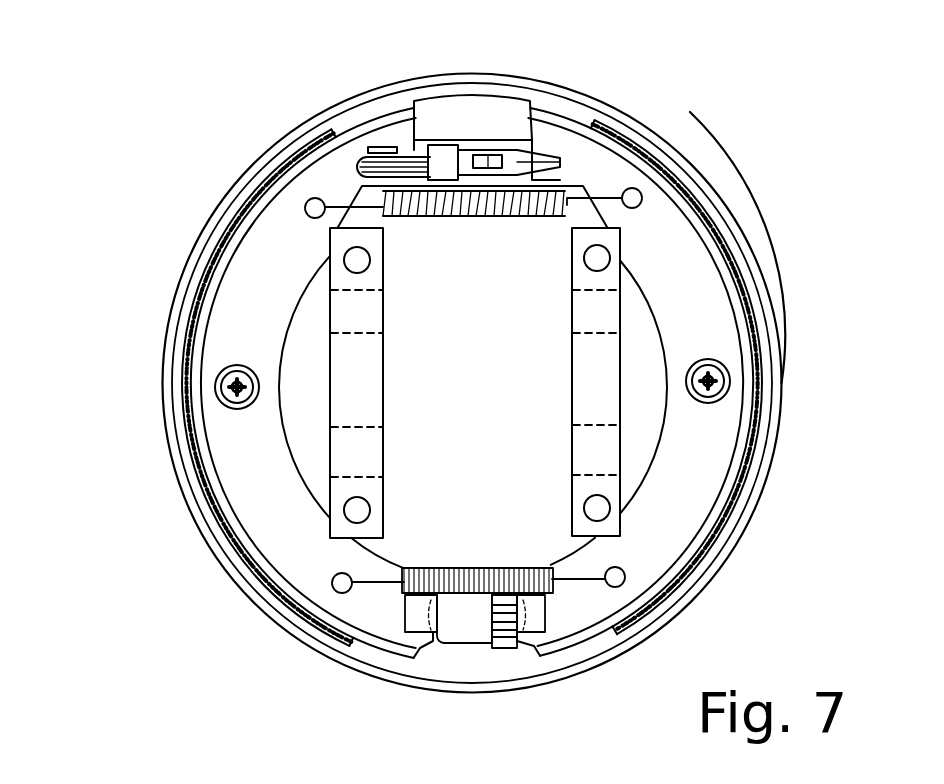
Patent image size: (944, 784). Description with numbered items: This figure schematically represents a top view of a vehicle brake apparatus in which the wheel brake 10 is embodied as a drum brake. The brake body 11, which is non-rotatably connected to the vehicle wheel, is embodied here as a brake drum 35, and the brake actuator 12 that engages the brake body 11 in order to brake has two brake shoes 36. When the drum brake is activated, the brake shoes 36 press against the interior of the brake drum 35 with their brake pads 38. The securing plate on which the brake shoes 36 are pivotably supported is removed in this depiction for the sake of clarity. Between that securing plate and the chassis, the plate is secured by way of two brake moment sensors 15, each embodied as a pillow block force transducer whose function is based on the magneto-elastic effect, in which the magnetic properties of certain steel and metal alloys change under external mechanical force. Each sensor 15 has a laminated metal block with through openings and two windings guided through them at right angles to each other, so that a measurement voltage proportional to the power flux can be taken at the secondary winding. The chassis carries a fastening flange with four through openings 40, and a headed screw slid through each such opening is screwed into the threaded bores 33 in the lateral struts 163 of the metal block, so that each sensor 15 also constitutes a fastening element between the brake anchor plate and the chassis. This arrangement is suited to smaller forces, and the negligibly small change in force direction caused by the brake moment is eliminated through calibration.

The wheel brake 10 is at (663, 100).
The brake body 11 is at (716, 183).
The brake drum 35 is at (752, 250).
The brake actuator 12 is at (718, 316).
The brake shoes 36 is at (235, 475).
The brake pads 38 is at (187, 382).
The brake moment sensor 15 is at (383, 401).
The lateral strut 163 is at (358, 312).
The threaded bores 33 is at (363, 260).
The through openings 40 is at (372, 779).